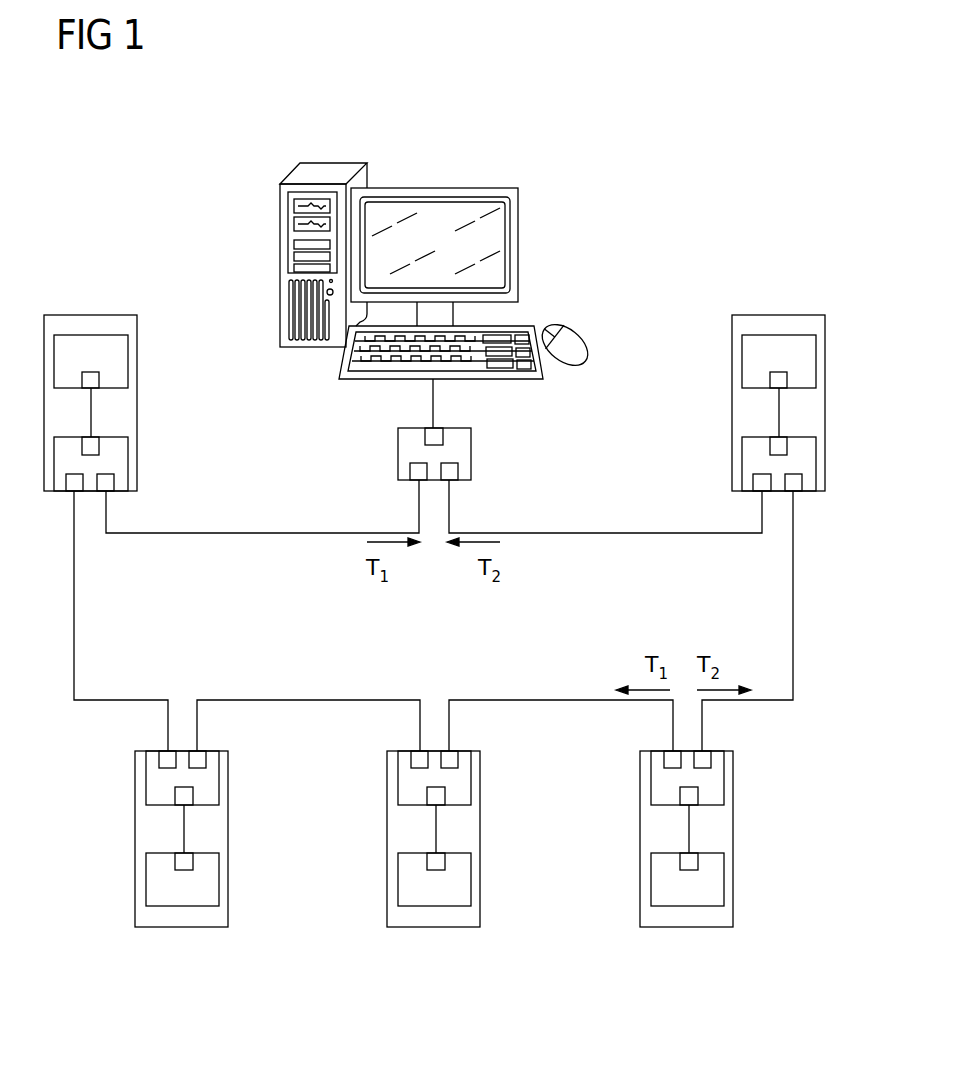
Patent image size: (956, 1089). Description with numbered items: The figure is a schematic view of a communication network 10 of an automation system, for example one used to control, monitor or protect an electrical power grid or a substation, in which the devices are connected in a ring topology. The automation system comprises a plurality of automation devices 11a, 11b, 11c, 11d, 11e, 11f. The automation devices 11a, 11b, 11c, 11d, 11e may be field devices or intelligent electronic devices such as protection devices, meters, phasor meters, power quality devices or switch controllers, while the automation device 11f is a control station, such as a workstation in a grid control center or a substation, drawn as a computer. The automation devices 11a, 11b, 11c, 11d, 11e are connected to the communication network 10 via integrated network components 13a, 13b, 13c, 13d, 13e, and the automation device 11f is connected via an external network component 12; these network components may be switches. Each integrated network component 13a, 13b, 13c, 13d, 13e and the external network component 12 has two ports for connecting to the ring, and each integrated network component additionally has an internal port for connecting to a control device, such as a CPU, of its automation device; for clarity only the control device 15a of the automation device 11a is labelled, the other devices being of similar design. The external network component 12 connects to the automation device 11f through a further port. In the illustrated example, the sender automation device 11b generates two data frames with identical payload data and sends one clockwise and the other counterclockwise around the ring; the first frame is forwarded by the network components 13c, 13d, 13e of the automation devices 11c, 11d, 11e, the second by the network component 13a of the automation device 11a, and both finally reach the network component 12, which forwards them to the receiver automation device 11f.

The communication network 10 is at (66, 758).
The automation device 11a is at (732, 415).
The automation device 11b is at (733, 835).
The automation device 11c is at (481, 835).
The automation device 11d is at (229, 835).
The automation device 11e is at (137, 413).
The automation device 11f is at (518, 240).
The external network component 12 is at (471, 452).
The integrated network component 13a is at (742, 478).
The integrated network component 13b is at (724, 773).
The integrated network component 13c is at (472, 773).
The integrated network component 13d is at (220, 773).
The integrated network component 13e is at (137, 476).
The control device 15a is at (742, 362).